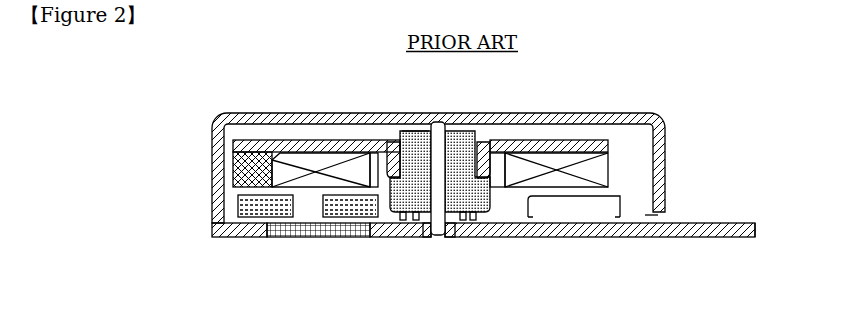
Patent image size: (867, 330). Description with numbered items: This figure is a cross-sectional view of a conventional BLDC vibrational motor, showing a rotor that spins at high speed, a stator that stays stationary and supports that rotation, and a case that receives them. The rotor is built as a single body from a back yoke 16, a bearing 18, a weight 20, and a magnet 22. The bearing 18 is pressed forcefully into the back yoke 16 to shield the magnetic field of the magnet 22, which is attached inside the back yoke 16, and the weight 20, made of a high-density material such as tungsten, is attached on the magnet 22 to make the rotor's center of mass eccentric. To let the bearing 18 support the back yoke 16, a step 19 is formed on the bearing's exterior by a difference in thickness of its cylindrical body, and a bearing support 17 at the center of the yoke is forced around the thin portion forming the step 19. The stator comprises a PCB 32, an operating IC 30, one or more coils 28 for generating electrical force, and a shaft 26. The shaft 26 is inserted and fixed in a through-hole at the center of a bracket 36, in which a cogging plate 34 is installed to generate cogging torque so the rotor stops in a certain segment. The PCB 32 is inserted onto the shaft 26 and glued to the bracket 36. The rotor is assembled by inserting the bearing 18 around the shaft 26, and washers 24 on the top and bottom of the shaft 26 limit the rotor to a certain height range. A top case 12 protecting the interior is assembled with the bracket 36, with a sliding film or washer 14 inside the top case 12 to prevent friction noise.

The top case 12 is at (244, 119).
The sliding film or washer 14 is at (410, 133).
The back yoke 16 is at (298, 145).
The bearing support 17 is at (485, 172).
The bearing 18 is at (458, 140).
The step 19 is at (413, 180).
The weight 20 is at (237, 162).
The magnet 22 is at (352, 160).
The washers 24 is at (395, 180).
The shaft 26 is at (438, 228).
The coil 28 is at (345, 210).
The operating IC 30 is at (574, 206).
The PCB 32 is at (702, 219).
The cogging plate 34 is at (290, 232).
The bracket 36 is at (243, 231).